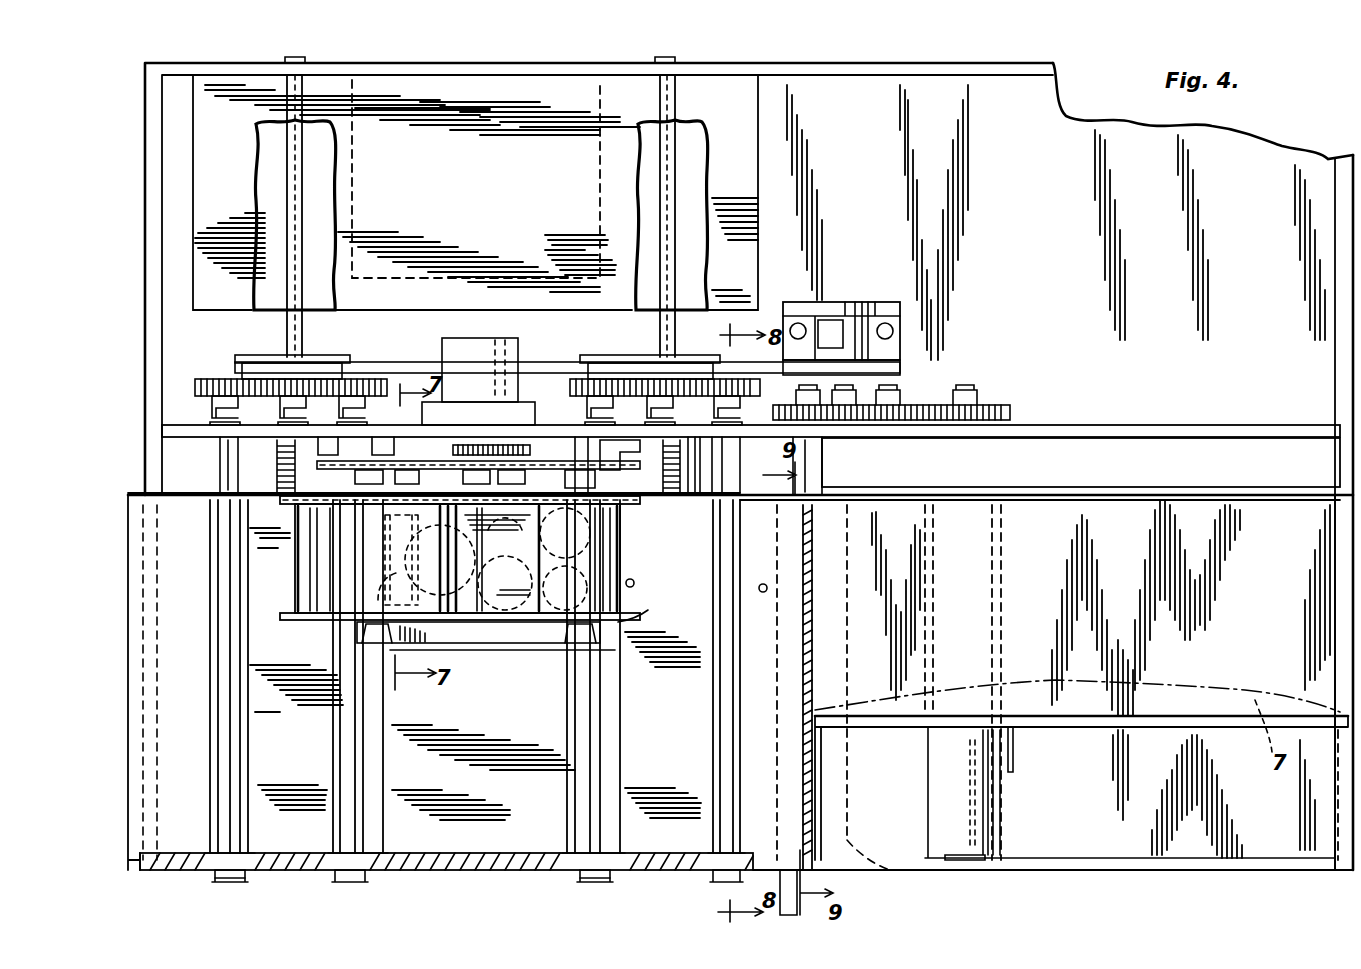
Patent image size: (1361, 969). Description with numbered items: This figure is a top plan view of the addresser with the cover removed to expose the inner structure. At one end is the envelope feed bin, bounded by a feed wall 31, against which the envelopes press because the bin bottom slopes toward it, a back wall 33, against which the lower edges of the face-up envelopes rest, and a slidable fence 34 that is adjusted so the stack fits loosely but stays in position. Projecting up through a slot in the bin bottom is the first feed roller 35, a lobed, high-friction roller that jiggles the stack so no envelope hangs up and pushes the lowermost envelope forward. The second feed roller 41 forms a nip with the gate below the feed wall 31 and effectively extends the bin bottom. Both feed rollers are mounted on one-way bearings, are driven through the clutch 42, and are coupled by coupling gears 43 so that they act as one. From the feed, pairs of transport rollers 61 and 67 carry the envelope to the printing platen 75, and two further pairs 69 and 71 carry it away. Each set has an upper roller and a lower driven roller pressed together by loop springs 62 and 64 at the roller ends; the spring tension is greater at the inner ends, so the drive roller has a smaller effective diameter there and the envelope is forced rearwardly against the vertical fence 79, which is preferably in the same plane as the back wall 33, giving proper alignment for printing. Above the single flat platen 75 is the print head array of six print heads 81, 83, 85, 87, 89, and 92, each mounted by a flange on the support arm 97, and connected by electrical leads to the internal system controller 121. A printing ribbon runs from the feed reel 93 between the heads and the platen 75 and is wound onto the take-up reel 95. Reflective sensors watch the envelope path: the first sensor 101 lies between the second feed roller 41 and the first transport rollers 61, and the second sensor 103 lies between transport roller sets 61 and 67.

The internal system controller 121 is at (412, 282).
The clutch 42 is at (835, 312).
The coupling gears 43 is at (950, 398).
The loop spring 64 is at (222, 423).
The vertical fence 79 is at (698, 490).
The back wall 33 is at (1278, 500).
The print head 92 is at (374, 524).
The print head 87 is at (385, 546).
The print head 89 is at (370, 590).
The feed reel 93 is at (318, 576).
The print head 85 is at (508, 545).
The print head 81 is at (590, 538).
The take-up reel 95 is at (634, 583).
The print head 83 is at (587, 598).
The second sensor 103 is at (672, 607).
The first sensor 101 is at (767, 588).
The printing platen 75 is at (459, 719).
The support arm 97 is at (540, 645).
The slidable fence 34 is at (1095, 730).
The feed wall 31 is at (812, 812).
The transport rollers 71 is at (220, 822).
The loop spring 62 is at (240, 880).
The transport rollers 69 is at (365, 822).
The transport rollers 67 is at (590, 830).
The transport rollers 61 is at (725, 828).
The second feed roller 41 is at (893, 878).
The first feed roller 35 is at (1000, 832).